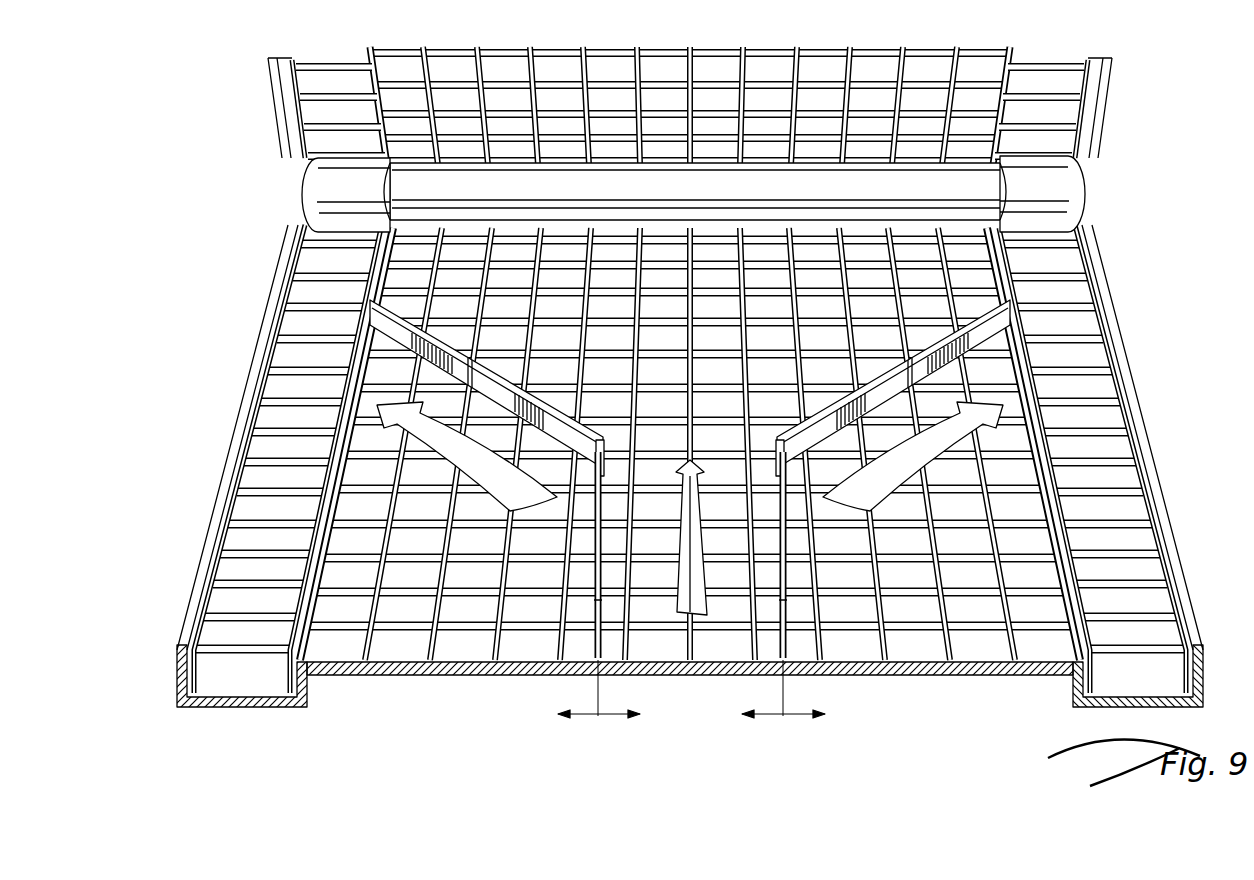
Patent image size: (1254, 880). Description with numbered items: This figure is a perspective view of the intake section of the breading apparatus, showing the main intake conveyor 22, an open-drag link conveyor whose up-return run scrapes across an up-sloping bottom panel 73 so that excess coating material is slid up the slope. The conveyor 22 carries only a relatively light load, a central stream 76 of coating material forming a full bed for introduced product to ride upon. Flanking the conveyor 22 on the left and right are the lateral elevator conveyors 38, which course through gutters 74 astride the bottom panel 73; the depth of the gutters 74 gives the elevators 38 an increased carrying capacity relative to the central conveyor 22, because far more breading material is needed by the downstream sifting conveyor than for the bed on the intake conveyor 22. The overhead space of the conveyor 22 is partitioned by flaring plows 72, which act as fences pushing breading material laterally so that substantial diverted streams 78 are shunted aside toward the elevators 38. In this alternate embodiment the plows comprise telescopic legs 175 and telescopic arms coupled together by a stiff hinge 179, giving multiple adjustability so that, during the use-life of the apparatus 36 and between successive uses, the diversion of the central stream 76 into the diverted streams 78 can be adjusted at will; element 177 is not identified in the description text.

The main intake conveyor 22 is at (645, 48).
The rear wall grid 36 is at (385, 34).
The lateral elevator conveyor 38 is at (318, 62).
The plow 72 is at (598, 655).
The bottom panel 73 is at (357, 675).
The gutter 74 is at (247, 686).
The central stream of coating material 76 is at (684, 625).
The diverted stream of coating material 78 is at (690, 456).
The telescopic leg 175 is at (647, 583).
The deflector plate 177 is at (690, 384).
The stiff hinge 179 is at (690, 435).